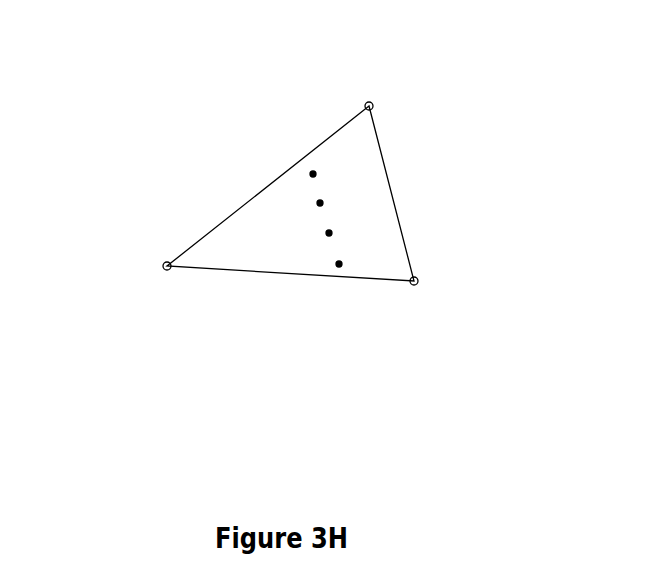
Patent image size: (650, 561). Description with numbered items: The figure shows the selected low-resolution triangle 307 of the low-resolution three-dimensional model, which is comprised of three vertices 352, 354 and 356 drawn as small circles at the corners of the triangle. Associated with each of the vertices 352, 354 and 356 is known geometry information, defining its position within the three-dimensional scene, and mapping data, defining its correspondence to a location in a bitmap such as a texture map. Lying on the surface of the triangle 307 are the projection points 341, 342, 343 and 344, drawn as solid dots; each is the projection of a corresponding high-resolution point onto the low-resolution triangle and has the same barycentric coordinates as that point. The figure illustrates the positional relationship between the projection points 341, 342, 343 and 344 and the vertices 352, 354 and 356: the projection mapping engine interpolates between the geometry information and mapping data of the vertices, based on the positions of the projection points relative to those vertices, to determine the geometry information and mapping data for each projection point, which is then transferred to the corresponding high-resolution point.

The selected low-resolution triangle 307 is at (240, 207).
The projection point 341 is at (313, 174).
The projection point 342 is at (320, 203).
The projection point 343 is at (329, 233).
The projection point 344 is at (339, 264).
The vertex 352 is at (373, 102).
The vertex 354 is at (418, 279).
The vertex 356 is at (163, 266).